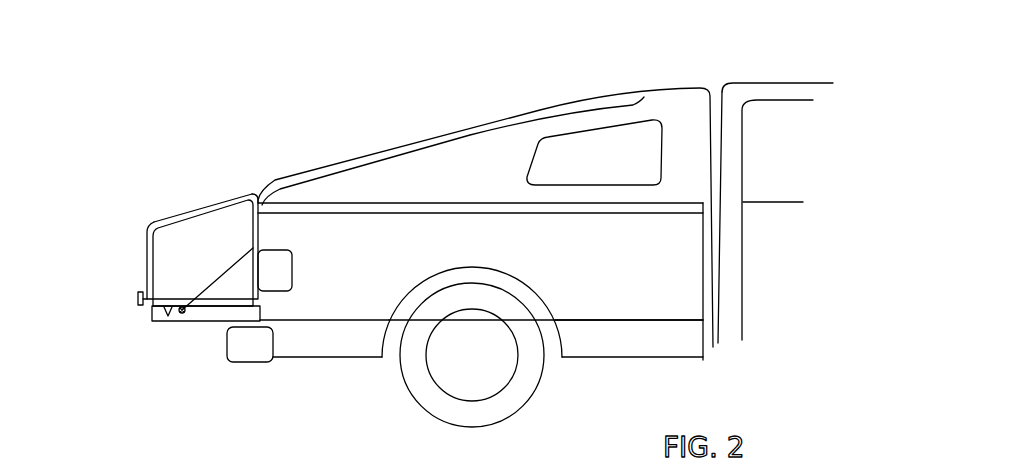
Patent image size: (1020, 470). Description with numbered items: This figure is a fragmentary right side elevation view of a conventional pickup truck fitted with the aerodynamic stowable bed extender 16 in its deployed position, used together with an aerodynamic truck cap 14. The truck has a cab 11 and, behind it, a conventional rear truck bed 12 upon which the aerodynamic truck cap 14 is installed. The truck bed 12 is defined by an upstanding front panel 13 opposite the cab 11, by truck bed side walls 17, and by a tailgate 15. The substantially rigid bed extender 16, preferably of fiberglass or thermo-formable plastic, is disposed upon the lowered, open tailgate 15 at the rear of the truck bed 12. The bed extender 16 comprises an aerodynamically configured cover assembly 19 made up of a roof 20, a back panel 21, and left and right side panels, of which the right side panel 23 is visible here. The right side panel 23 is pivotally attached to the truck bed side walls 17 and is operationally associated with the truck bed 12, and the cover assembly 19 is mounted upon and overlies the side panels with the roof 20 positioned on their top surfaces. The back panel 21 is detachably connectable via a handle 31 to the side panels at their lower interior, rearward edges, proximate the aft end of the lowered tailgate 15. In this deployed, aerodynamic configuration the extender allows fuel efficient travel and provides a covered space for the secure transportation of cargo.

The cab 11 is at (763, 82).
The truck bed 12 is at (575, 278).
The front panel 13 is at (703, 307).
The aerodynamic truck cap 14 is at (462, 130).
The tailgate 15 is at (208, 313).
The aerodynamic bed extender 16 is at (193, 228).
The truck bed side walls 17 is at (350, 298).
The cover assembly 19 is at (167, 208).
The roof 20 is at (222, 200).
The back panel 21 is at (143, 268).
The right side panel 23 is at (192, 267).
The handle 31 is at (137, 297).